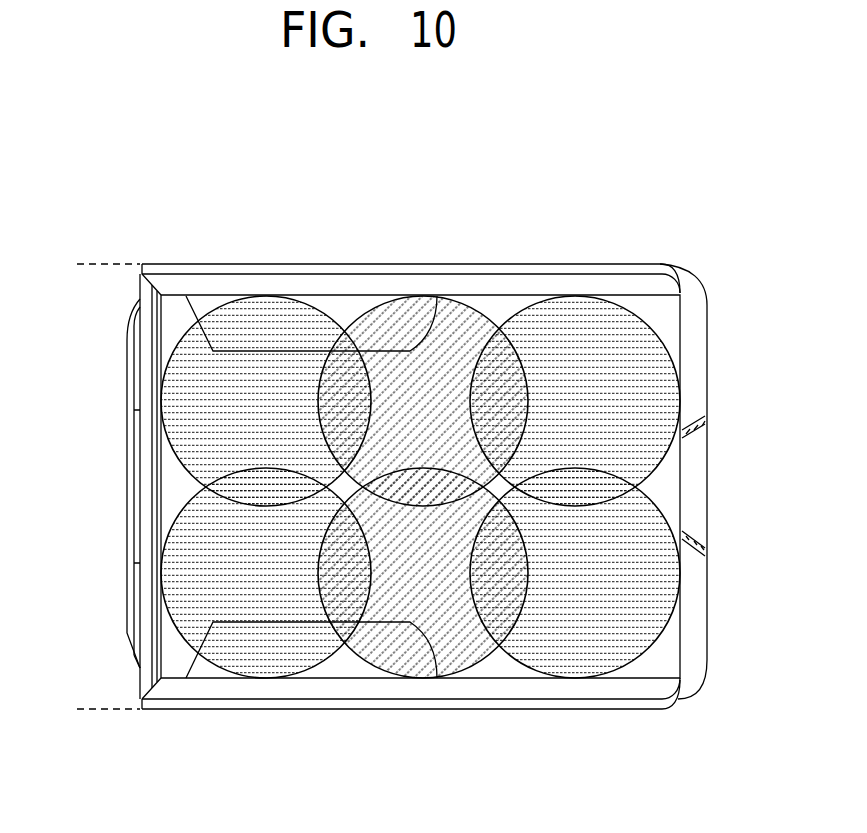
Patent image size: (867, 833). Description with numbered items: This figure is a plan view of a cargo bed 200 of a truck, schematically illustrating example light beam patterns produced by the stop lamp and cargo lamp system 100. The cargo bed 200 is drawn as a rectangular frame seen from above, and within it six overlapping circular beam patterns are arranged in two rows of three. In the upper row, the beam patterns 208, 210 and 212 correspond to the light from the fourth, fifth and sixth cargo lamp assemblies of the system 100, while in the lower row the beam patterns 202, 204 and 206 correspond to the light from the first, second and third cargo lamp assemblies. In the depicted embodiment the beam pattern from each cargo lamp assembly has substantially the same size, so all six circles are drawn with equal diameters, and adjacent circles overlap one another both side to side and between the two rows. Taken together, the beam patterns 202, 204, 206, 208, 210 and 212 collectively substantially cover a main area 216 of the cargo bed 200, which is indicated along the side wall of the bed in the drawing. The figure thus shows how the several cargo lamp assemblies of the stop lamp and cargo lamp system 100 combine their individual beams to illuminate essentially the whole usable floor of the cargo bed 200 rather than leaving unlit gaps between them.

The stop lamp and cargo lamp system 100 is at (132, 481).
The cargo bed 200 is at (452, 688).
The beam pattern 202 is at (213, 650).
The beam pattern 204 is at (368, 660).
The beam pattern 206 is at (518, 663).
The beam pattern 208 is at (200, 294).
The beam pattern 210 is at (365, 308).
The beam pattern 212 is at (520, 308).
The main area 216 is at (667, 485).